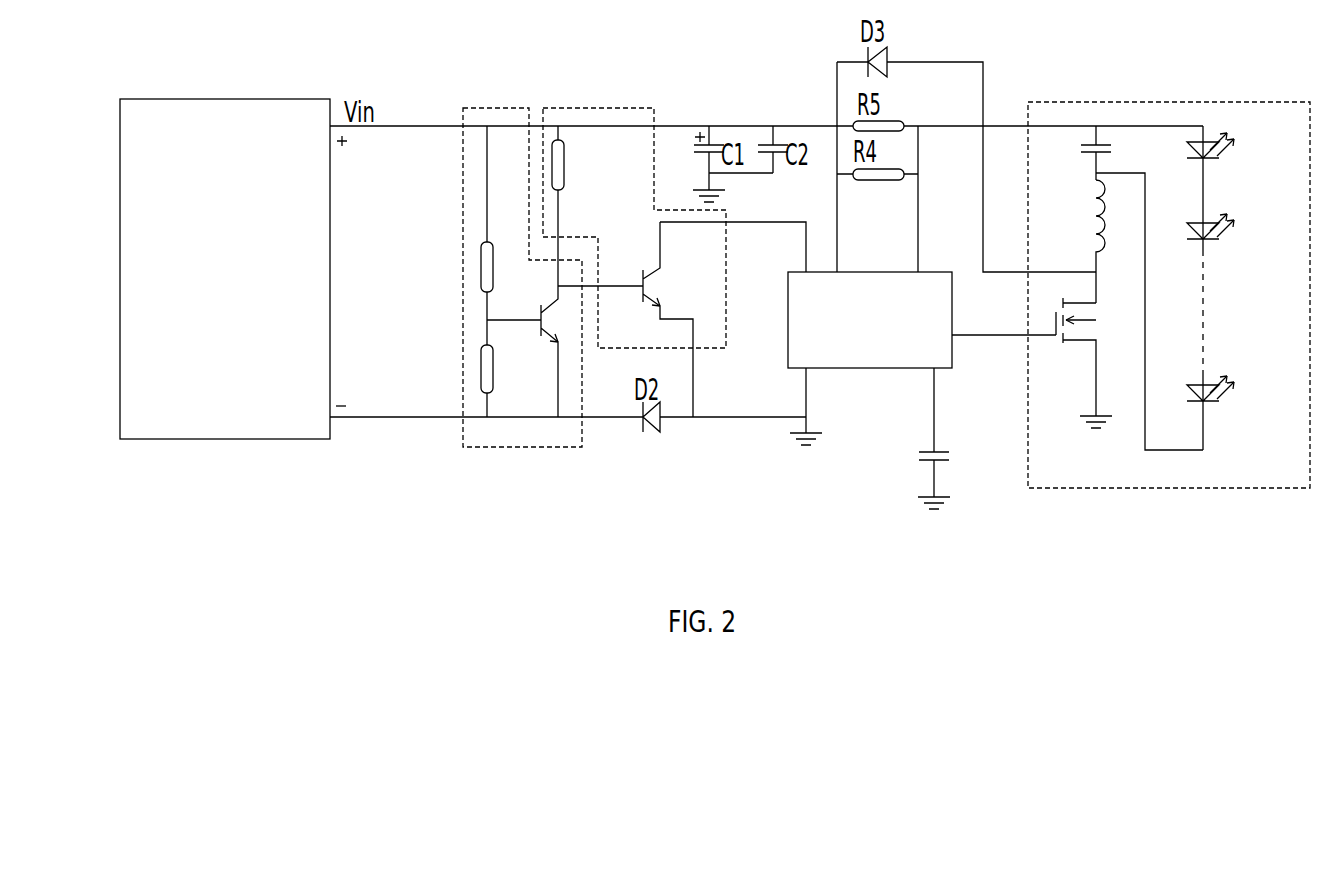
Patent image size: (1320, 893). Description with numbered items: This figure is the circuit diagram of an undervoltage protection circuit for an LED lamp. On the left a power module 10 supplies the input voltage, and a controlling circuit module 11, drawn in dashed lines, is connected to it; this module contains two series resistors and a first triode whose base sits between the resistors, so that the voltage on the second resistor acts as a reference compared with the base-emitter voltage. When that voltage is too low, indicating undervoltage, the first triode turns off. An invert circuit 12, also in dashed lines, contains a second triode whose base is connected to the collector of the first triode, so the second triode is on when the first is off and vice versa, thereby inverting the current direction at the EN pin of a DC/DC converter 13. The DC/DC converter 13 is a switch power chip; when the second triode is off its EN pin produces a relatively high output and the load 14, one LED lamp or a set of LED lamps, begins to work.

The power module 10 is at (243, 99).
The controlling circuit module 11 is at (495, 108).
The invert circuit 12 is at (591, 108).
The DC/DC converter 13 is at (875, 368).
The load 14 is at (1092, 488).